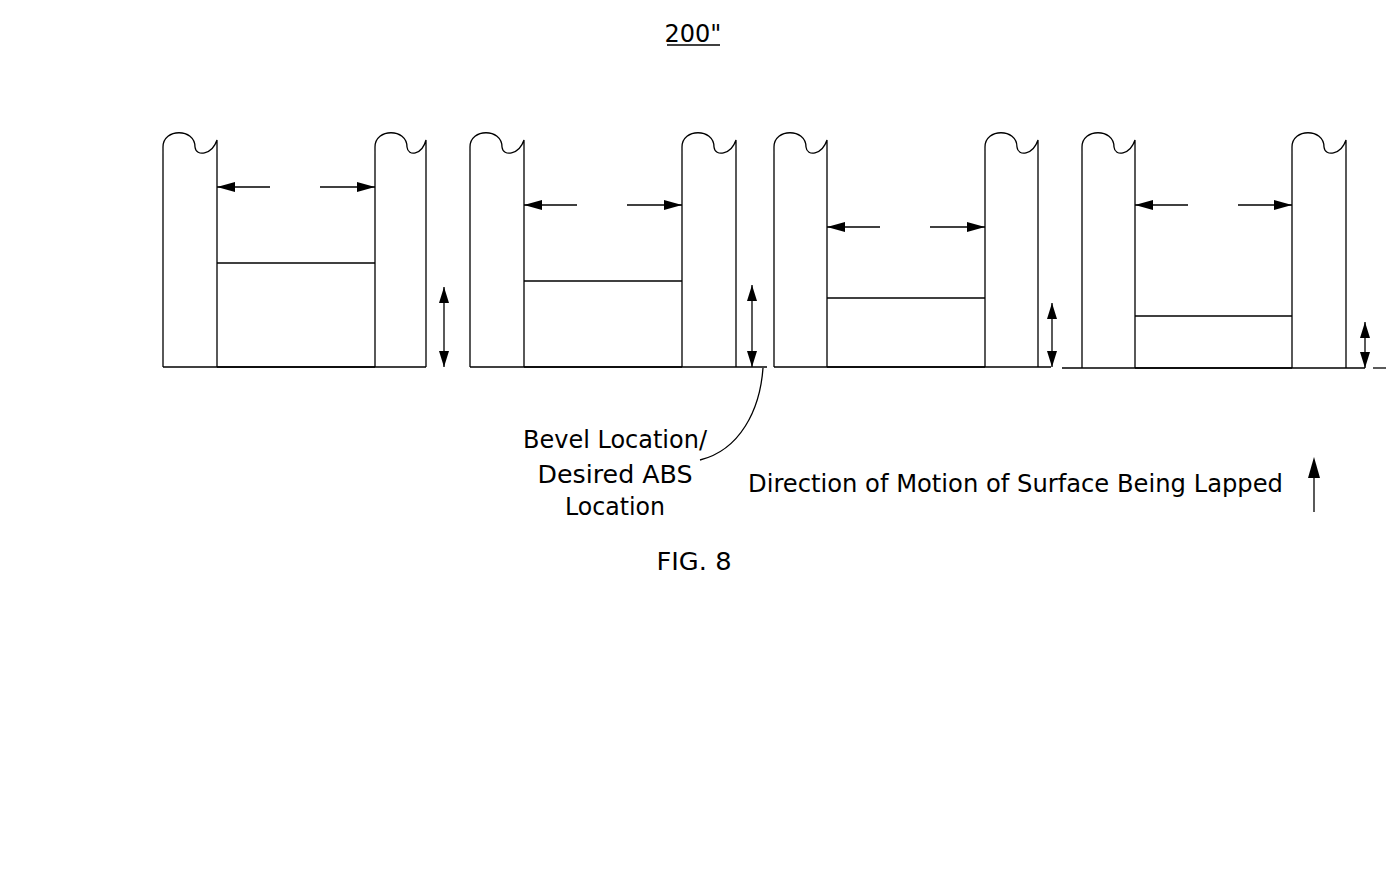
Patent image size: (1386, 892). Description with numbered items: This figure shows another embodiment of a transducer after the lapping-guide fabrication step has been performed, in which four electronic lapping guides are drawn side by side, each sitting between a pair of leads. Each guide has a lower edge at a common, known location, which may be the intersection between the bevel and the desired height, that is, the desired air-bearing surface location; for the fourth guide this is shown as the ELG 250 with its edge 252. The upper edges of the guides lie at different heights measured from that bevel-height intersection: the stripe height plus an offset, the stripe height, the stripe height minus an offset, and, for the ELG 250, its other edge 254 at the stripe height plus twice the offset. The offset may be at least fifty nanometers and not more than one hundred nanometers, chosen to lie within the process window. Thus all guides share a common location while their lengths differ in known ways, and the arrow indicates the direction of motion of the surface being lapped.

The ELG 250 is at (311, 264).
The other edge 254 is at (232, 263).
The edge 252 is at (250, 368).